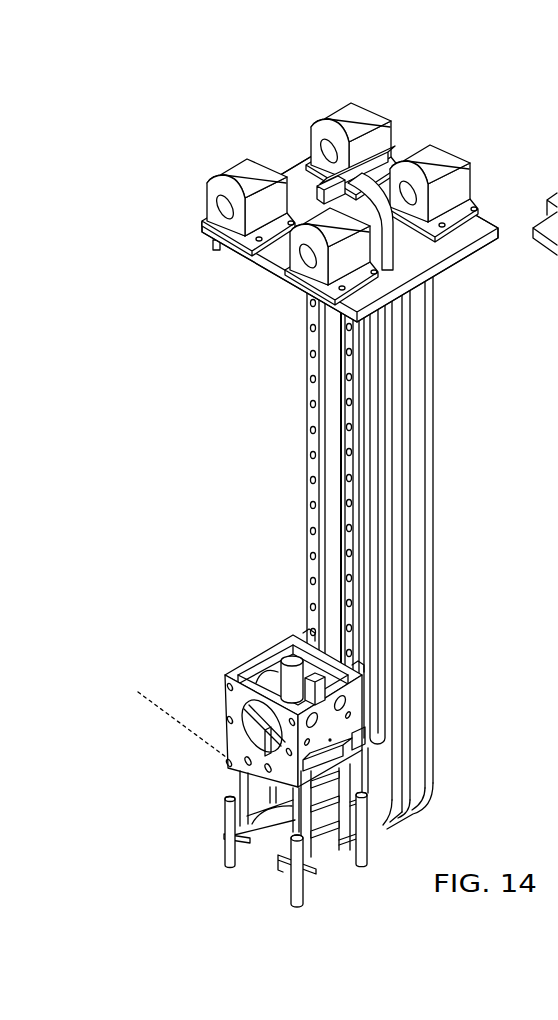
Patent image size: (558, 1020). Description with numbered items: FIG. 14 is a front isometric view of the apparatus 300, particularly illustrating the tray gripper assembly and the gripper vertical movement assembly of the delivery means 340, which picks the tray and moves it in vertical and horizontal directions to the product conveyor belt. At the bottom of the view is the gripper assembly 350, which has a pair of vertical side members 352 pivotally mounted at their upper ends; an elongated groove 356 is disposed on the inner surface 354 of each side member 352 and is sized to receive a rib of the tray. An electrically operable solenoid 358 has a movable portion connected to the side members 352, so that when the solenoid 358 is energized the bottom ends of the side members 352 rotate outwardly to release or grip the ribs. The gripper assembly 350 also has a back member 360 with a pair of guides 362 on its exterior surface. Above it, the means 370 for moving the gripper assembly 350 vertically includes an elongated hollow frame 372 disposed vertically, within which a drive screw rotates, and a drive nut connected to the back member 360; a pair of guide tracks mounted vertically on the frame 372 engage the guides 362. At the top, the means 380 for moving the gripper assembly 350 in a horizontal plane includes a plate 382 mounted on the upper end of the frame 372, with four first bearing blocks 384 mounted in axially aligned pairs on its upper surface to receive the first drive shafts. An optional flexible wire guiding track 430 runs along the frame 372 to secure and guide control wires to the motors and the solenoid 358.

The linear positioning assembly 300 is at (207, 140).
The delivery means 340 is at (505, 87).
The means for moving the gripper assembly in a horizontal plane 380 is at (473, 254).
The first bearing blocks 384 is at (346, 112).
The plate 382 is at (216, 241).
The means for moving the gripper assembly in a vertical direction 370 is at (452, 527).
The elongated hollow frame 372 is at (436, 447).
The flexible wire guiding track 430 is at (434, 750).
The gripper assembly 350 is at (191, 663).
The back member 360 is at (328, 655).
The guides 362 is at (356, 666).
The electrically operable solenoid 358 is at (286, 636).
The vertical side members 352 is at (233, 782).
The inner surface 354 is at (246, 808).
The elongated grooves 356 is at (232, 840).